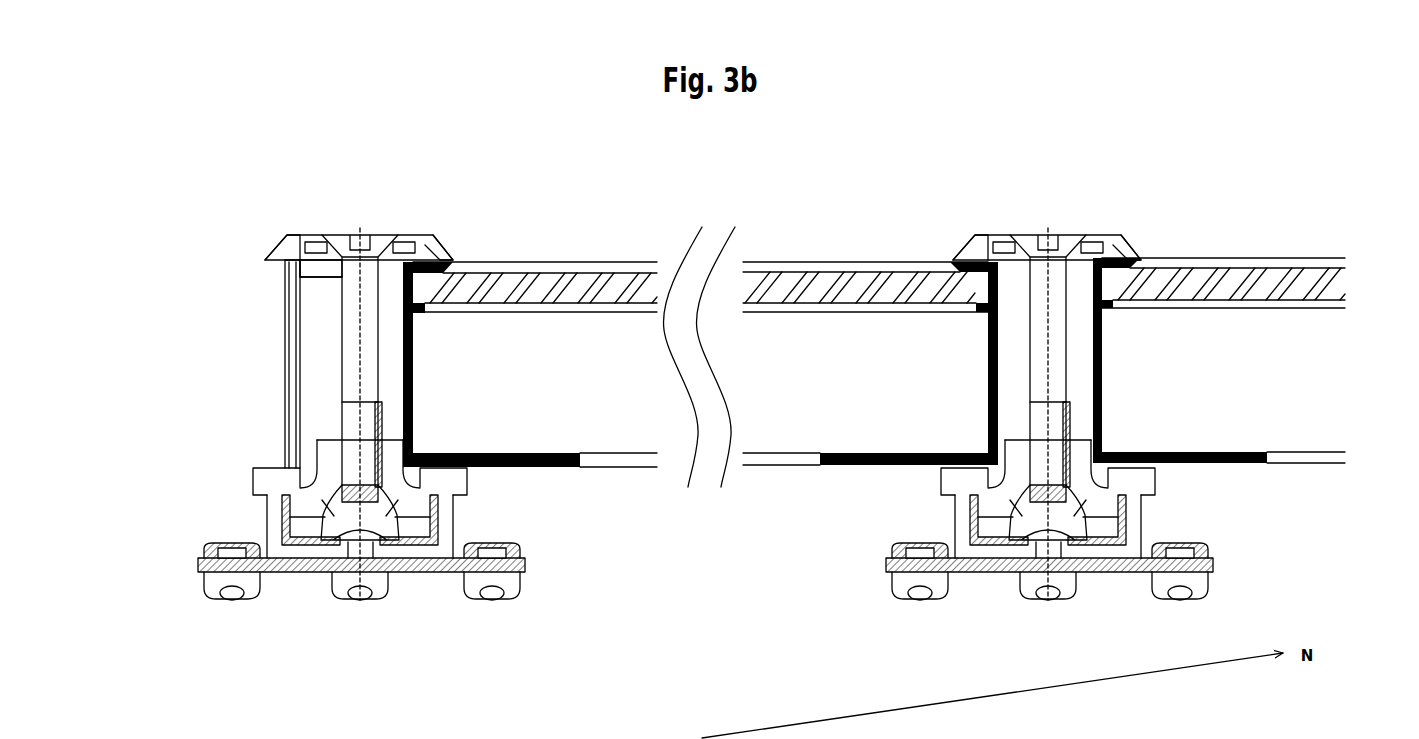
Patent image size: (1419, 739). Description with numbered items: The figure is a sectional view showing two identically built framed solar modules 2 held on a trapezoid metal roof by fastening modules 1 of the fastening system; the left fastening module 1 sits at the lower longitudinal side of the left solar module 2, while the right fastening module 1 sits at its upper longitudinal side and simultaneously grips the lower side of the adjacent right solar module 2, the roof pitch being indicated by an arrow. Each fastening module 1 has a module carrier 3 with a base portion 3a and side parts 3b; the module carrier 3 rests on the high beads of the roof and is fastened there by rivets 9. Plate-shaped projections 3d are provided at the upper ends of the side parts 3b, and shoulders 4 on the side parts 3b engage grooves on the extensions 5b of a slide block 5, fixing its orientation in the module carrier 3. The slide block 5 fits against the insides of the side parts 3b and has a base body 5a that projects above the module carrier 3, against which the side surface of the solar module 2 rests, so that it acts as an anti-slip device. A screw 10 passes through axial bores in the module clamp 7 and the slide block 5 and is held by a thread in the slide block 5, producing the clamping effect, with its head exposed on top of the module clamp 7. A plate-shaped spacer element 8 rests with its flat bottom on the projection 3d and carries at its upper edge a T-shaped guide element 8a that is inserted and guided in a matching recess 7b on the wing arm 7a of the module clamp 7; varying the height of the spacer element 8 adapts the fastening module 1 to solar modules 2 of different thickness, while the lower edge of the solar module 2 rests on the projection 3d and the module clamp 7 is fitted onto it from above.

The fastening module 1 is at (365, 175).
The solar module 2 is at (567, 214).
The module carrier 3 is at (305, 615).
The base plate 3a is at (446, 578).
The side part 3b is at (267, 520).
The plate-shaped projection 3d is at (253, 485).
The shoulder 4 is at (318, 480).
The slide block 5 is at (326, 430).
The base body 5a is at (392, 440).
The extension 5b is at (704, 552).
The module clamp 7 is at (278, 238).
The wing arm 7a is at (440, 250).
The recess 7b is at (318, 238).
The spacer element 8 is at (285, 366).
The T-shaped guide element 8a is at (305, 248).
The rivet 9 is at (226, 600).
The screw 10 is at (352, 325).